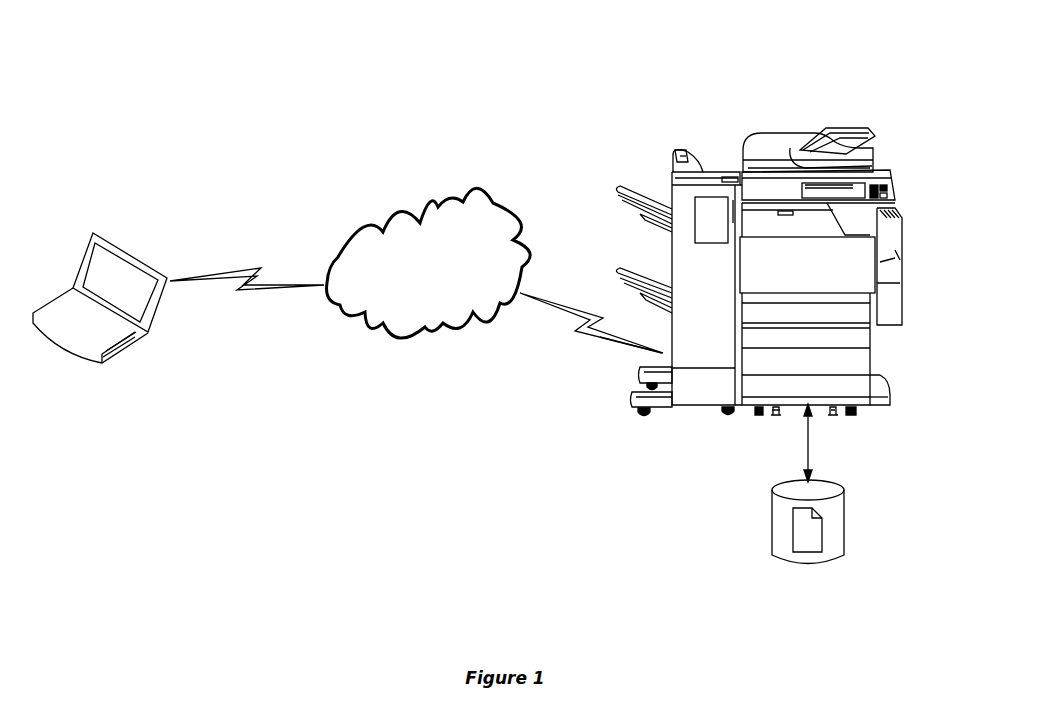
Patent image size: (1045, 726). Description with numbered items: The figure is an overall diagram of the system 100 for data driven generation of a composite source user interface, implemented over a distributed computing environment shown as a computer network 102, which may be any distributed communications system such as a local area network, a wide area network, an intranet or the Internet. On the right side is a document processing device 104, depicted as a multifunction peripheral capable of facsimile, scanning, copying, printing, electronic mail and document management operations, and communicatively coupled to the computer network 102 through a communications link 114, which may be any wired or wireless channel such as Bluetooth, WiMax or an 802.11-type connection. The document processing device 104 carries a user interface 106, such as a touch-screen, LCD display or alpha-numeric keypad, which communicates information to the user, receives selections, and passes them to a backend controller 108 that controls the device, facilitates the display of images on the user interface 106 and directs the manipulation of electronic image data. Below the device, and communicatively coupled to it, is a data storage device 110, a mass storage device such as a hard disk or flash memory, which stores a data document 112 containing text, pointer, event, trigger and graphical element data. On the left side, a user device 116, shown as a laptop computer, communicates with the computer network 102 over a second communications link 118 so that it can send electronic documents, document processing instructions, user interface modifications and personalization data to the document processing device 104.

The system 100 is at (164, 58).
The computer network 102 is at (474, 188).
The document processing device 104 is at (762, 133).
The user interface 106 is at (897, 190).
The controller 108 is at (880, 260).
The data storage device 110 is at (840, 488).
The data document 112 is at (822, 543).
The communications link 114 is at (593, 338).
The user device 116 is at (92, 239).
The communications link 118 is at (256, 293).